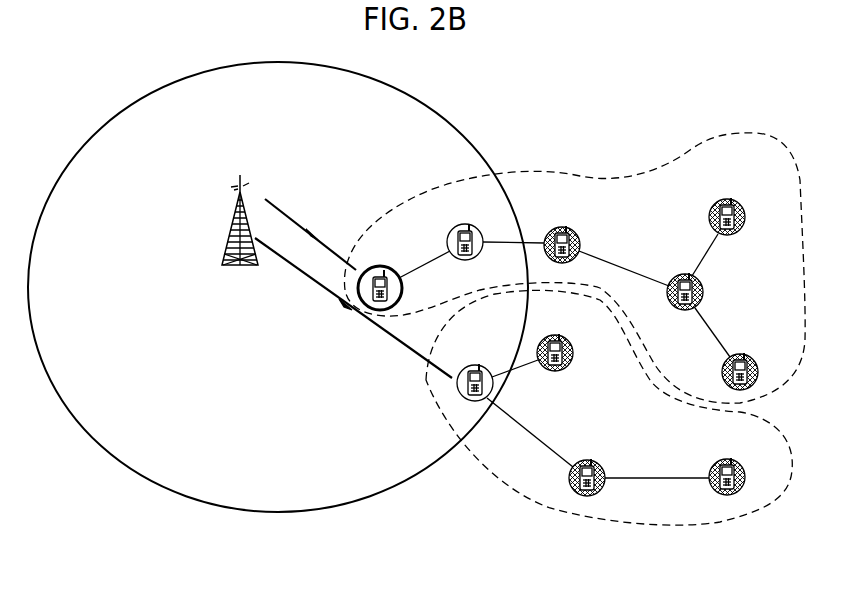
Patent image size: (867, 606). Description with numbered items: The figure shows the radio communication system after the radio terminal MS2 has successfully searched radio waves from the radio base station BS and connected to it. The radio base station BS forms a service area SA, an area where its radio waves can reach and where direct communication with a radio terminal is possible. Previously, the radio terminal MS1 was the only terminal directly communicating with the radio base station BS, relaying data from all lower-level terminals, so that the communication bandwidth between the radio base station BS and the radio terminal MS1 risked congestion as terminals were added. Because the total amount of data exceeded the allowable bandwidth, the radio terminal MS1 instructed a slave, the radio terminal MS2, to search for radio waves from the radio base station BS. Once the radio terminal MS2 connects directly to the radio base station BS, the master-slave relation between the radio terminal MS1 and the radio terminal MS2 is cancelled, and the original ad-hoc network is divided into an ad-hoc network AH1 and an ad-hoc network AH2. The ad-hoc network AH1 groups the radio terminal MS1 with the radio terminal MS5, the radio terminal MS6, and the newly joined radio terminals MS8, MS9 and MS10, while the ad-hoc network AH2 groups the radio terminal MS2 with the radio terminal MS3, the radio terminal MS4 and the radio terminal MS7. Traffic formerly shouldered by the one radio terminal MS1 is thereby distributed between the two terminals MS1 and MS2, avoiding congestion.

The service area SA is at (429, 104).
The radio base station BS is at (228, 219).
The ad-hoc network AH1 is at (733, 132).
The ad-hoc network AH2 is at (520, 490).
The radio terminal MS1 is at (377, 266).
The radio terminal MS2 is at (472, 365).
The radio terminal MS3 is at (552, 336).
The radio terminal MS4 is at (584, 460).
The radio terminal MS5 is at (465, 224).
The radio terminal MS6 is at (559, 227).
The radio terminal MS7 is at (721, 459).
The radio terminal MS8 is at (704, 284).
The radio terminal MS9 is at (739, 353).
The radio terminal MS10 is at (721, 199).